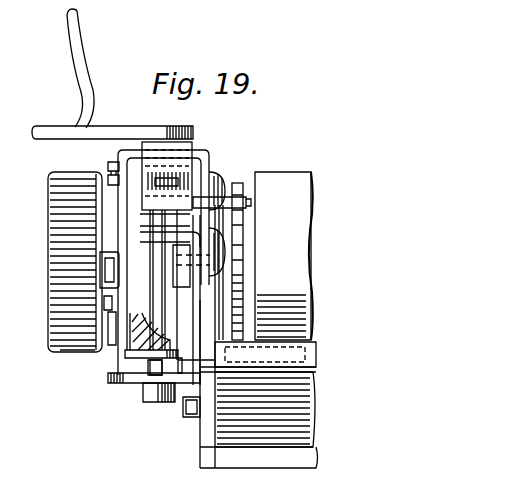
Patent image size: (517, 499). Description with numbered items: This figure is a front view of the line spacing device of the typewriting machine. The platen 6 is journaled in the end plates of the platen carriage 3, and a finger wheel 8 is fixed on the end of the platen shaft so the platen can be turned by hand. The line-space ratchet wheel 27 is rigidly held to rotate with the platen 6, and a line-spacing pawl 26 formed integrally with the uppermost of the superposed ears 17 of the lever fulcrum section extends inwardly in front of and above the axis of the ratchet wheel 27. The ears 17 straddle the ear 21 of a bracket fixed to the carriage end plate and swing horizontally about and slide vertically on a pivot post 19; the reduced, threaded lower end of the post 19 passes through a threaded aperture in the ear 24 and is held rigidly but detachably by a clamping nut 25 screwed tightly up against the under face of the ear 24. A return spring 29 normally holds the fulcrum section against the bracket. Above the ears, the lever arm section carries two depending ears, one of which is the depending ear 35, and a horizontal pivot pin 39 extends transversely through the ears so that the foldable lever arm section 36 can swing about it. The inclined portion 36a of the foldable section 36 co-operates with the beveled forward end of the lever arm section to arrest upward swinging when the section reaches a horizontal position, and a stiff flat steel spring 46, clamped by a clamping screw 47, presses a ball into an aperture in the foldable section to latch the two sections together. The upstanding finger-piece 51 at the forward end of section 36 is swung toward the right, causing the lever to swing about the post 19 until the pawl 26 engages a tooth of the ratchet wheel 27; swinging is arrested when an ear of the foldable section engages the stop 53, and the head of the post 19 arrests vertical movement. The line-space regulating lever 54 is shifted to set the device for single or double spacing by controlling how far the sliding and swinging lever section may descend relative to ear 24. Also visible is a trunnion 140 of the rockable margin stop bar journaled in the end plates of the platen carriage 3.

The platen carriage 3 is at (233, 418).
The platen 6 is at (288, 178).
The finger wheel 8 is at (73, 346).
The ears 17 is at (135, 367).
The pivot post 19 is at (137, 315).
The ear 21 is at (172, 285).
The ear 24 is at (185, 395).
The clamping nut 25 is at (145, 394).
The line-spacing pawl 26 is at (226, 198).
The line-space ratchet wheel 27 is at (240, 183).
The return spring 29 is at (133, 347).
The depending ear 35 is at (211, 154).
The foldable lever arm section 36 is at (110, 130).
The inclined portion 36a is at (200, 150).
The horizontal pivot pin 39 is at (170, 230).
The flat steel spring 46 is at (116, 203).
The clamping screw 47 is at (110, 164).
The finger-piece 51 is at (79, 72).
The stop 53 is at (187, 287).
The line-space regulating lever 54 is at (98, 266).
The trunnion 140 is at (193, 415).